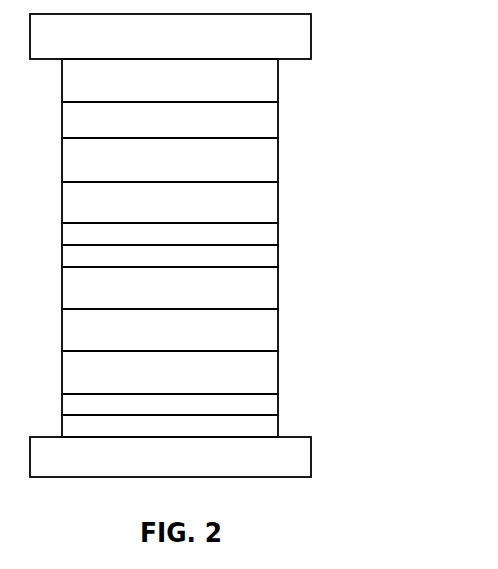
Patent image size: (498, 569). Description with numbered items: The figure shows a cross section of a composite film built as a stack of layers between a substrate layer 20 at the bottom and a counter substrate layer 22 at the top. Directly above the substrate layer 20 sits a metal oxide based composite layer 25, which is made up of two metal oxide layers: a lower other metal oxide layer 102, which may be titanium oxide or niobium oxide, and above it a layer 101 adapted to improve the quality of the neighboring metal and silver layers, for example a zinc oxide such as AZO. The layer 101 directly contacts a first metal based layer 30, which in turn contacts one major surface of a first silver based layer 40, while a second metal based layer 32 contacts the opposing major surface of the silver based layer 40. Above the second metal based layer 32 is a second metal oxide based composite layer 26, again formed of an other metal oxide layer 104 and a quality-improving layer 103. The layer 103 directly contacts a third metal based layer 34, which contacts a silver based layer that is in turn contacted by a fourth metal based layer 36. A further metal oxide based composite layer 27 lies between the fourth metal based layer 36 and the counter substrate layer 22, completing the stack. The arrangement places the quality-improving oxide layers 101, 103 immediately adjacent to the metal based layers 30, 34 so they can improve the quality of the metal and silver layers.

The substrate layer 20 is at (303, 457).
The counter substrate layer 22 is at (303, 30).
The metal oxide based composite layer 25 is at (169, 415).
The metal oxide based composite layer 26 is at (169, 245).
The metal oxide based composite layer 27 is at (271, 73).
The first metal based layer 30 is at (271, 370).
The second metal based layer 32 is at (271, 285).
The third metal based layer 34 is at (271, 200).
The fourth metal based layer 36 is at (271, 121).
The first silver based layer 40 is at (271, 327).
The layer adapted to improve quality 101 is at (75, 405).
The other metal oxide layer 102 is at (75, 427).
The layer adapted to improve quality 103 is at (75, 235).
The other metal oxide layer 104 is at (75, 257).